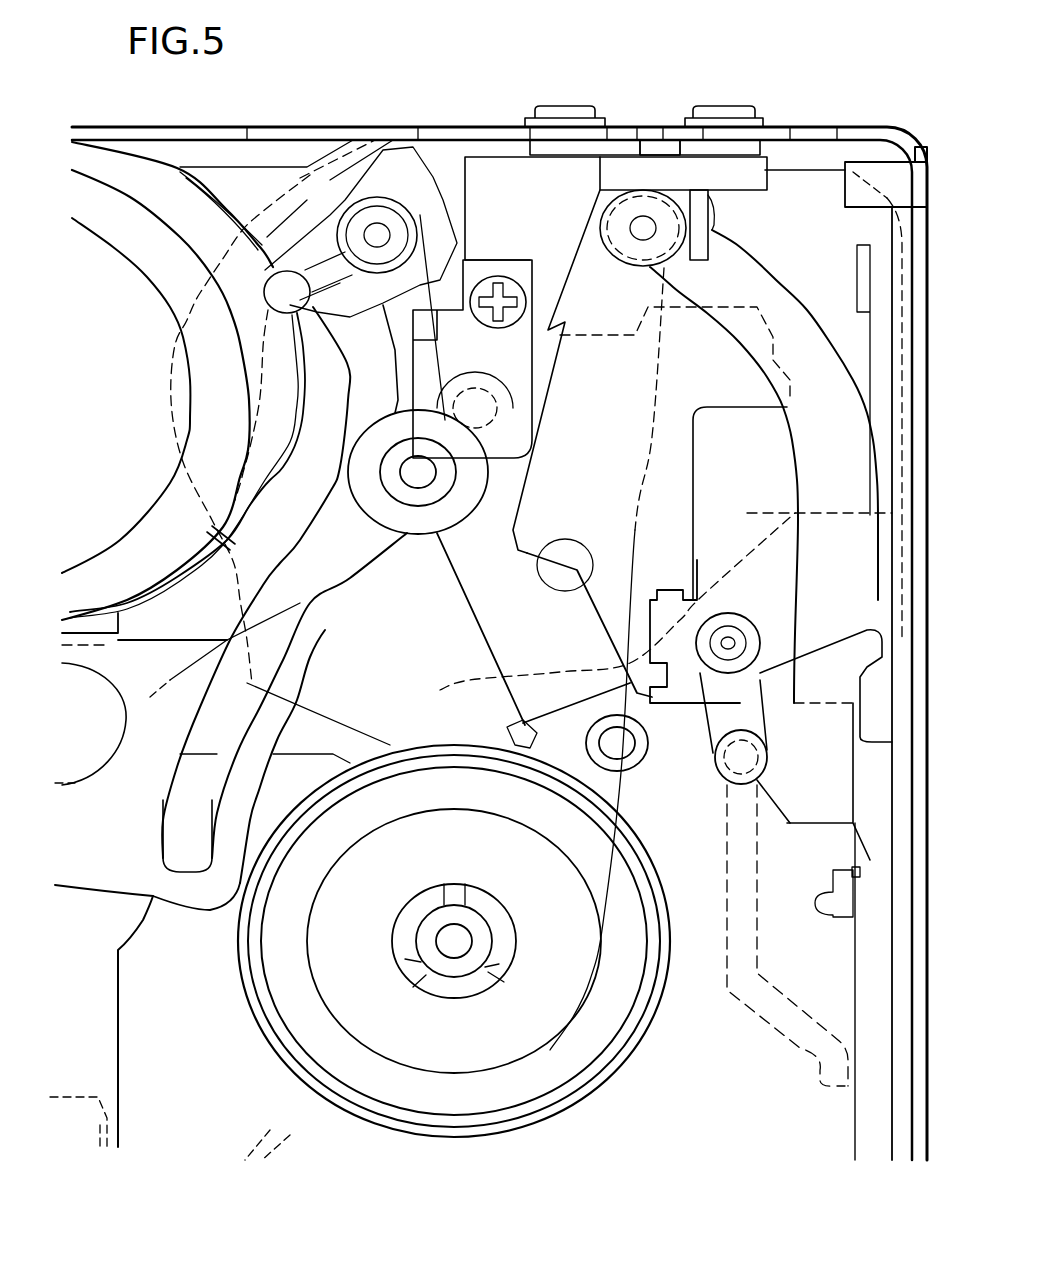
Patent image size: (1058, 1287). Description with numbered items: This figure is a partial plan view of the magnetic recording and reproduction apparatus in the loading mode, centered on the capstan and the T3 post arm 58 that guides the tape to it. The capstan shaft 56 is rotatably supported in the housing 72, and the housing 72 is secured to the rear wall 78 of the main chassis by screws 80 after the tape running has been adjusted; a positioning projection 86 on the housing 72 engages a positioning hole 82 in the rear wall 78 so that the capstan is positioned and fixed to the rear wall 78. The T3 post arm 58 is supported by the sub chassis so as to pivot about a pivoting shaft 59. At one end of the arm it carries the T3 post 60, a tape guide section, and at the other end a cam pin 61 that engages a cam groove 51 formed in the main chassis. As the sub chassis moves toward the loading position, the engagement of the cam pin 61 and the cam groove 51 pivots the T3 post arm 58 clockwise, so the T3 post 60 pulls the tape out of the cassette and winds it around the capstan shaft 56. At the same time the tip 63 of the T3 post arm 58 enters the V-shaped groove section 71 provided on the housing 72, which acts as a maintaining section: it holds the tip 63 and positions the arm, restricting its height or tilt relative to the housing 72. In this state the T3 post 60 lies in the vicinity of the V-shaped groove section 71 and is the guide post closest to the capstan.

The cam groove 51 is at (750, 1017).
The capstan shaft 56 is at (477, 412).
The T3 post arm 58 is at (793, 296).
The pivoting shaft 59 is at (732, 638).
The T3 post 60 is at (633, 252).
The cam pin 61 is at (718, 777).
The tip 63 is at (710, 208).
The V-shaped groove section 71 is at (700, 248).
The housing 72 is at (502, 187).
The rear wall 78 is at (775, 127).
The screws 80 is at (567, 105).
The positioning hole 82 is at (653, 125).
The positioning projection 86 is at (648, 127).